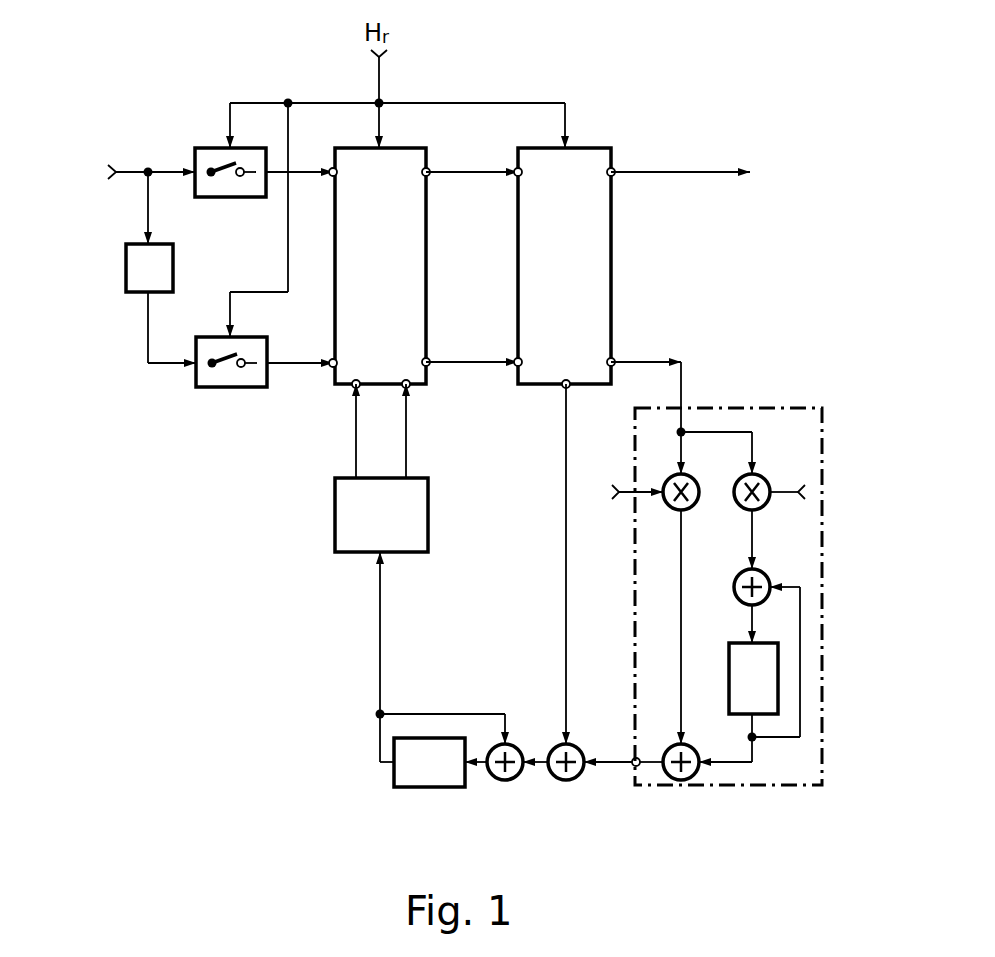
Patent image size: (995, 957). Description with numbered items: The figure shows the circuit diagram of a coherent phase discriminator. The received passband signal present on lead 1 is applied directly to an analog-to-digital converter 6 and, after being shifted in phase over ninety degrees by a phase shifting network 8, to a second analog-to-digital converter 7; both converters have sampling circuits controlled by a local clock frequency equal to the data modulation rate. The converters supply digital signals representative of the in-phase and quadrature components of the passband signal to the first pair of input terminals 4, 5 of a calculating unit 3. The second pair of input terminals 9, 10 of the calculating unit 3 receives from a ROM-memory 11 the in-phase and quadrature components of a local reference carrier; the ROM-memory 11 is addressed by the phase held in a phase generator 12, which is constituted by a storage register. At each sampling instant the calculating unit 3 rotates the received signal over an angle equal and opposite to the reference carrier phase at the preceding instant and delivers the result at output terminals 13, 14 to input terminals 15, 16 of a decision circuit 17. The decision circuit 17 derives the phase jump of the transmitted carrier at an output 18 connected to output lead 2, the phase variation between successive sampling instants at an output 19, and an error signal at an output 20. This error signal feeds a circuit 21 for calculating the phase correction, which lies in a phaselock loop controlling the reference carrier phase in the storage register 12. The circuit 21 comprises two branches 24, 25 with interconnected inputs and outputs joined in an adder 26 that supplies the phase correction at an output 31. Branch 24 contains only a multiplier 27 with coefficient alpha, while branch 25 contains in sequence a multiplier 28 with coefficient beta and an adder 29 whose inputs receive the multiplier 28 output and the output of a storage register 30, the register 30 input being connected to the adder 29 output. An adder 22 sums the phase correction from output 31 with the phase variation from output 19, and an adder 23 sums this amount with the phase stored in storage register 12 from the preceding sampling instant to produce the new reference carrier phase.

The lead 1 is at (128, 172).
The output lead 2 is at (698, 172).
The calculating unit 3 is at (335, 258).
The input terminal 4 is at (330, 168).
The input terminal 5 is at (330, 368).
The analog-to-digital converter 6 is at (188, 88).
The analog-to-digital converter 7 is at (258, 233).
The phase shifting network 8 is at (176, 270).
The input terminal 9 is at (352, 388).
The input terminal 10 is at (410, 388).
The ROM-memory 11 is at (428, 500).
The phase generator 12 is at (422, 788).
The output terminal 13 is at (430, 168).
The output terminal 14 is at (430, 358).
The input terminal 15 is at (515, 176).
The input terminal 16 is at (515, 366).
The decision circuit 17 is at (611, 252).
The output 18 is at (615, 168).
The output 19 is at (563, 390).
The output 20 is at (615, 358).
The circuit for calculating the phase correction 21 is at (760, 405).
The adder 22 is at (573, 780).
The adder 23 is at (503, 780).
The branch 24 is at (663, 627).
The branch 25 is at (776, 539).
The adder 26 is at (665, 746).
The multiplier 27 is at (690, 478).
The multiplier 28 is at (761, 478).
The adder 29 is at (735, 580).
The storage register 30 is at (729, 665).
The output 31 is at (633, 757).